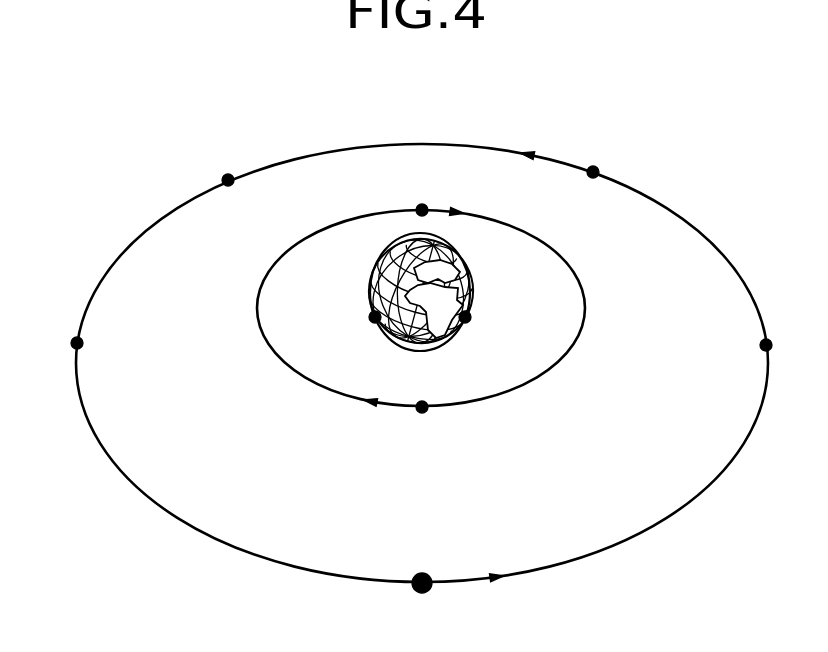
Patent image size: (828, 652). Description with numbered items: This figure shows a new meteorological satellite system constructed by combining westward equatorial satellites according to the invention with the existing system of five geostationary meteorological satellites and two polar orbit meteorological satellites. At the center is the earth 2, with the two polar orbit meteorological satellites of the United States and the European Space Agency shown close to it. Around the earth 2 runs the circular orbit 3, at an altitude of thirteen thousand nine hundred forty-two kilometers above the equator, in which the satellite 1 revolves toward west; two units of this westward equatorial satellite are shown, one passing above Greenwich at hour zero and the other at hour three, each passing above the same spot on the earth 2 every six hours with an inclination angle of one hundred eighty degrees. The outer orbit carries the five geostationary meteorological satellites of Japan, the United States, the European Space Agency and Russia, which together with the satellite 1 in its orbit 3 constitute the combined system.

The satellite 1 is at (431, 404).
The earth 2 is at (471, 278).
The circular orbit 3 is at (567, 263).